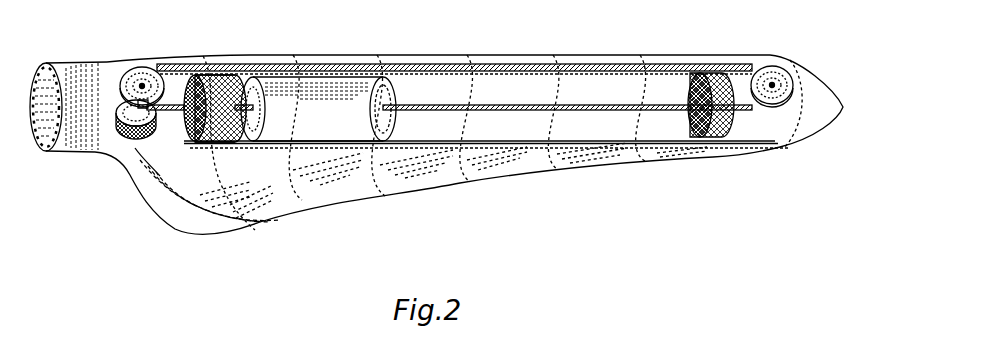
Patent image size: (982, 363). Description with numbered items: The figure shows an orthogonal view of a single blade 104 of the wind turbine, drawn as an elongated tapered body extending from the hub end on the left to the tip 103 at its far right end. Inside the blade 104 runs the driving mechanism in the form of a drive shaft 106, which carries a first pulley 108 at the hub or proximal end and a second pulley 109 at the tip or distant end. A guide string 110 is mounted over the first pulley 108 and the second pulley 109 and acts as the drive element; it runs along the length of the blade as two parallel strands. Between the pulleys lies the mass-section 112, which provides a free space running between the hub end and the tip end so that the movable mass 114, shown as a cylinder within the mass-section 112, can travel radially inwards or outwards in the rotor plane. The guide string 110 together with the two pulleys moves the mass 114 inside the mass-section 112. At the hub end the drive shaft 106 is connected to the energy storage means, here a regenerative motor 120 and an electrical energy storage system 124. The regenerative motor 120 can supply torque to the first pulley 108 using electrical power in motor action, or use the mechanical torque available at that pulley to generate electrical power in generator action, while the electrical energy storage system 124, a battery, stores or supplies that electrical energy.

The tip 103 is at (820, 118).
The blade 104 is at (257, 208).
The drive shaft 106 is at (143, 84).
The first pulley 108 is at (128, 78).
The second pulley 109 is at (781, 78).
The guide string 110 is at (513, 66).
The mass-section 112 is at (535, 148).
The movable mass 114 is at (317, 85).
The regenerative motor 120 is at (118, 128).
The electrical energy storage system 124 is at (153, 141).